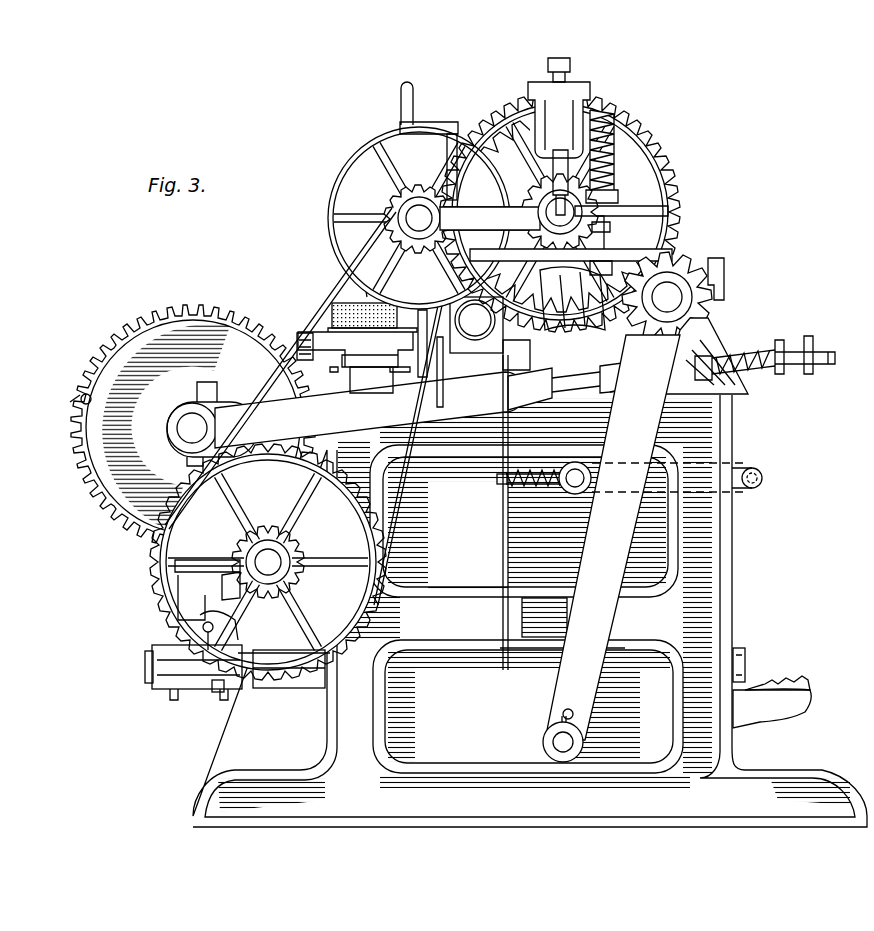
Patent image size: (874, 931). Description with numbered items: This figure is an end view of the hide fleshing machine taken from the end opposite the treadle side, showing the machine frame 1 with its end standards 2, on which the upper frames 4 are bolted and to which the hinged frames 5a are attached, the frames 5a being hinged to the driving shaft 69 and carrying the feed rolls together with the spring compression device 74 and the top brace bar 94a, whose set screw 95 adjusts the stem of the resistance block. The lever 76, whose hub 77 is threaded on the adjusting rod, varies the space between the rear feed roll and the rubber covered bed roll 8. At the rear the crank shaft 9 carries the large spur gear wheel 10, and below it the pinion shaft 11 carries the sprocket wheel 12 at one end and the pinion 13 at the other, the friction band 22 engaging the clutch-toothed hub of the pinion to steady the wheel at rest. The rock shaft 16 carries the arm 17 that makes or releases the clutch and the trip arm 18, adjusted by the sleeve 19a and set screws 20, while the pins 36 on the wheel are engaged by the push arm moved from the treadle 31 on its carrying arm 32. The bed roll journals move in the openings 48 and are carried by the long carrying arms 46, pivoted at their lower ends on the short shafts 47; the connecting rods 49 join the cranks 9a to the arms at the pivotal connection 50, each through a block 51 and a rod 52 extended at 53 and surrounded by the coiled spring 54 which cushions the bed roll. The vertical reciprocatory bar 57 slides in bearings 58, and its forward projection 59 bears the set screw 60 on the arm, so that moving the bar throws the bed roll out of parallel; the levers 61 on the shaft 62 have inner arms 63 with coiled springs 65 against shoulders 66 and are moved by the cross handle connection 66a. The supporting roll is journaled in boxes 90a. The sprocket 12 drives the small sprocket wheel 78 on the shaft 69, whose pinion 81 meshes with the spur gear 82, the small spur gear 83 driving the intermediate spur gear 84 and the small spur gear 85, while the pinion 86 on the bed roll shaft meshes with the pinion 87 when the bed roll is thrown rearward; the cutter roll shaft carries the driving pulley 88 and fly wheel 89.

The machine frame 1 is at (215, 783).
The end standards 2 is at (722, 572).
The upper frames 4 is at (640, 252).
The hinged frames 5a is at (612, 200).
The bed roll 8 is at (714, 297).
The crank shaft 9 is at (182, 436).
The cranks 9a is at (215, 414).
The spur gear wheel 10 is at (212, 312).
The pinion shaft 11 is at (265, 590).
The sprocket wheel 12 is at (160, 590).
The pinion 13 is at (232, 582).
The rock shaft 16 is at (150, 667).
The arm 17 is at (258, 655).
The trip arm 18 is at (192, 614).
The sleeve 19a is at (218, 692).
The set screws 20 is at (207, 636).
The friction band 22 is at (252, 545).
The treadle 31 is at (800, 676).
The carrying arm 32 is at (790, 706).
The pins 36 is at (82, 396).
The carrying arms 46 is at (592, 548).
The short shafts 47 is at (543, 742).
The openings 48 is at (614, 272).
The connecting rods 49 is at (330, 404).
The pivotal connection 50 is at (668, 367).
The block 51 is at (624, 365).
The rod 52 is at (585, 373).
The extension of rod 53 is at (820, 345).
The coiled spring 54 is at (748, 348).
The reciprocatory bar 57 is at (502, 522).
The sliding bearings 58 is at (522, 600).
The forward projection 59 is at (572, 300).
The set screw 60 is at (718, 345).
The levers 61 is at (752, 468).
The shaft 62 is at (570, 486).
The inner arm 63 is at (545, 464).
The coiled spring 65 is at (504, 482).
The shoulder 66 is at (580, 463).
The cross handle connection 66a is at (762, 483).
The driving shaft 69 is at (404, 211).
The spring compression device 74 is at (612, 148).
The lever 76 is at (432, 122).
The hub 77 is at (470, 124).
The small sprocket wheel 78 is at (420, 185).
The pinion 81 is at (400, 230).
The spur gear 82 is at (670, 177).
The small spur gear 83 is at (558, 180).
The intermediate spur gear 84 is at (496, 118).
The small spur gear 85 is at (458, 266).
The pinion 86 is at (718, 284).
The pinion 87 is at (565, 190).
The driving pulley 88 is at (348, 272).
The fly wheel 89 is at (372, 280).
The boxes 90a is at (736, 393).
The brace bar 94a is at (585, 125).
The set screw 95 is at (546, 68).